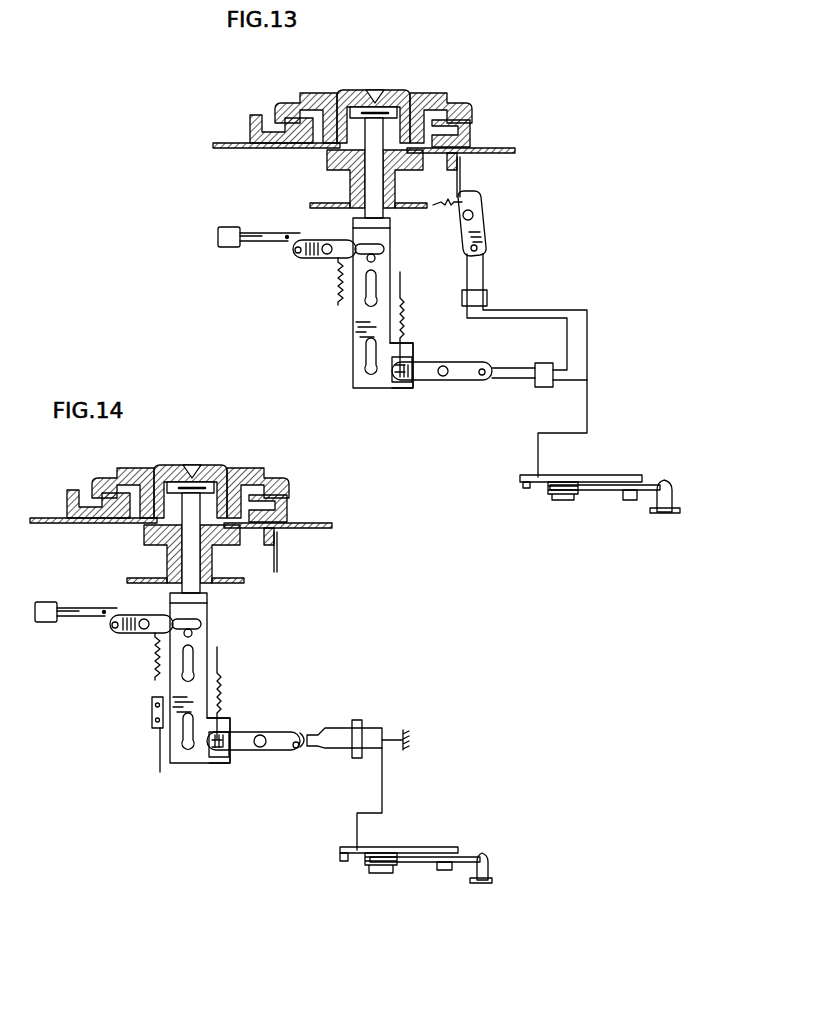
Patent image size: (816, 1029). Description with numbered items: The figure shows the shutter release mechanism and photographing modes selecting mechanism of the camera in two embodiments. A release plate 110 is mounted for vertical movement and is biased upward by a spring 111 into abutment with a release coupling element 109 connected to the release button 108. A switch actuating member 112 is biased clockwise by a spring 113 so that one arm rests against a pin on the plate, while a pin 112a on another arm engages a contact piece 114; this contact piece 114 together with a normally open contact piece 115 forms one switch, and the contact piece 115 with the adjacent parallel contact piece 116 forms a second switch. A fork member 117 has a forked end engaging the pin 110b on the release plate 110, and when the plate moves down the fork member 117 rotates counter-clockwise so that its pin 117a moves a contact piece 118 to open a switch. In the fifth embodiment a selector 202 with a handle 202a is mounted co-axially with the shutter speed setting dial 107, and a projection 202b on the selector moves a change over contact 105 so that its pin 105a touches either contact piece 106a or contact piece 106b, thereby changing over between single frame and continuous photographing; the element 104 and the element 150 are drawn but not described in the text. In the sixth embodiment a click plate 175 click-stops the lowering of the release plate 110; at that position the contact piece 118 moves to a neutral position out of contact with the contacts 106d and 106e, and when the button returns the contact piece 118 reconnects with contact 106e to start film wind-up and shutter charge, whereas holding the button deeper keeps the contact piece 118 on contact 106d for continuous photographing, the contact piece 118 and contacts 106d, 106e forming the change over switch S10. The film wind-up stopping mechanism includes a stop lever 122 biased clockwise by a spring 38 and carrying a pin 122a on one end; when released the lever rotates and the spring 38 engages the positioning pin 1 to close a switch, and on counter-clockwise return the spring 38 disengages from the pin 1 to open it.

In FIG. 13, the positioning pin 1 is at (670, 492).
In FIG. 14, the positioning pin 1 is at (490, 872).
In FIG. 13, the spring 38 is at (645, 495).
In FIG. 14, the spring 38 is at (458, 858).
In FIG. 13, the spring 104 is at (452, 204).
In FIG. 13, the change over contact 105 is at (485, 224).
In FIG. 13, the pin 105a is at (480, 252).
In FIG. 13, the contact piece 106a is at (466, 296).
In FIG. 13, the contact piece 106b is at (487, 296).
In FIG. 14, the contact 106d is at (355, 720).
In FIG. 14, the contact 106e is at (337, 748).
In FIG. 13, the shutter speed setting dial 107 is at (467, 113).
In FIG. 14, the shutter speed setting dial 107 is at (288, 487).
In FIG. 13, the release button 108 is at (390, 92).
In FIG. 14, the release button 108 is at (208, 468).
In FIG. 13, the release coupling element 109 is at (372, 184).
In FIG. 14, the release coupling element 109 is at (225, 560).
In FIG. 13, the release plate 110 is at (362, 325).
In FIG. 14, the release plate 110 is at (172, 678).
In FIG. 13, the pin 110b is at (395, 388).
In FIG. 14, the pin 110b is at (212, 762).
In FIG. 14, the spring 111 is at (222, 672).
In FIG. 13, the switch actuating member 112 is at (330, 262).
In FIG. 14, the switch actuating member 112 is at (125, 642).
In FIG. 13, the pin 112a is at (300, 254).
In FIG. 14, the pin 112a is at (105, 630).
In FIG. 13, the spring 113 is at (336, 300).
In FIG. 14, the spring 113 is at (152, 650).
In FIG. 13, the contact piece 114 is at (250, 250).
In FIG. 14, the contact piece 114 is at (52, 625).
In FIG. 13, the contact piece 115 is at (244, 235).
In FIG. 14, the contact piece 115 is at (57, 602).
In FIG. 13, the contact piece 116 is at (266, 230).
In FIG. 14, the contact piece 116 is at (92, 600).
In FIG. 13, the fork member 117 is at (440, 380).
In FIG. 14, the fork member 117 is at (257, 752).
In FIG. 13, the pin 117a is at (482, 376).
In FIG. 14, the pin 117a is at (296, 752).
In FIG. 13, the contact piece 118 is at (492, 368).
In FIG. 14, the contact piece 118 is at (304, 735).
In FIG. 13, the stop lever 122 is at (522, 475).
In FIG. 14, the stop lever 122 is at (344, 848).
In FIG. 13, the pin 122a is at (524, 488).
In FIG. 14, the pin 122a is at (342, 860).
In FIG. 13, the wire 150 is at (587, 408).
In FIG. 14, the wire 150 is at (383, 785).
In FIG. 14, the click plate 175 is at (152, 745).
In FIG. 13, the selector 202 is at (470, 137).
In FIG. 13, the handle 202a is at (257, 115).
In FIG. 13, the projection 202b is at (462, 162).
In FIG. 14, the change over switch S10 is at (360, 716).